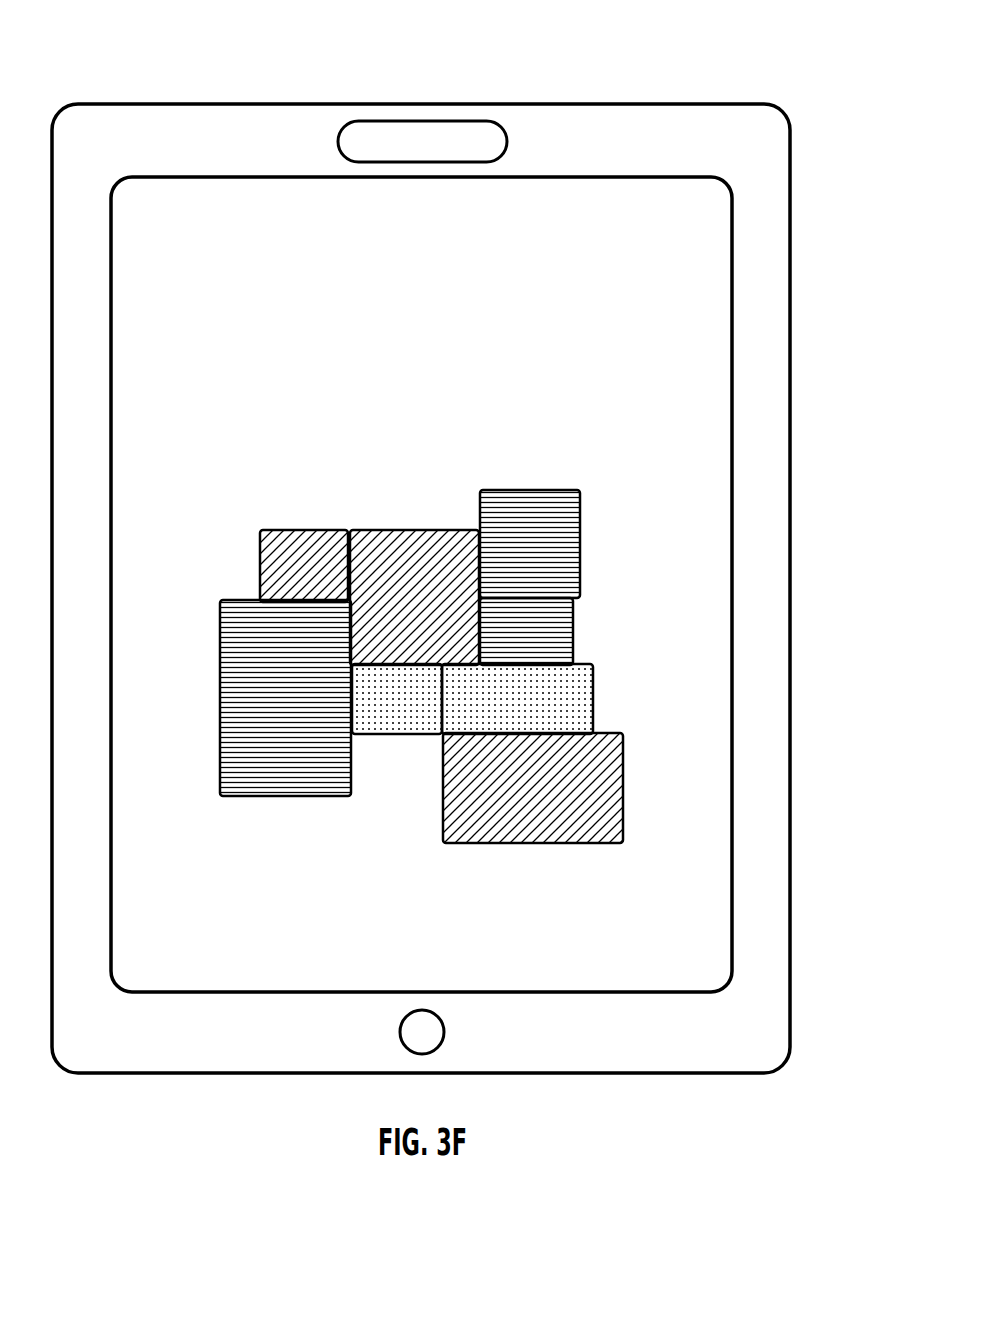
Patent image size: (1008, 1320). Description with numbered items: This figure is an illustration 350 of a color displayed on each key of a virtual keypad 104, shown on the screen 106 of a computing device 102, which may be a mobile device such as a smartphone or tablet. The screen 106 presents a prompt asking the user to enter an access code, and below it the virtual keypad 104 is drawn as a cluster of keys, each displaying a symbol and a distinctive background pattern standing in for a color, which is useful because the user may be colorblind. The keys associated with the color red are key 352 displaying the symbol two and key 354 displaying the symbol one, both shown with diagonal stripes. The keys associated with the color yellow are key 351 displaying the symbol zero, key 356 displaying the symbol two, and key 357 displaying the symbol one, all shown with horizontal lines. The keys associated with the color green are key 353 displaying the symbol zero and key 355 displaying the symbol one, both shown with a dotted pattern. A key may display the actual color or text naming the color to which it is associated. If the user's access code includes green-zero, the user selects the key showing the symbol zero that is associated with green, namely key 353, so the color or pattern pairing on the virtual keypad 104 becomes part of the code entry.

The illustration 350 is at (115, 56).
The computing device 102 is at (421, 563).
The screen 106 is at (508, 571).
The virtual keypad 104 is at (218, 447).
The key 351 is at (514, 574).
The key 352 is at (517, 817).
The key 353 is at (501, 728).
The key 354 is at (398, 627).
The key 355 is at (381, 728).
The key 356 is at (510, 661).
The key 357 is at (269, 727).